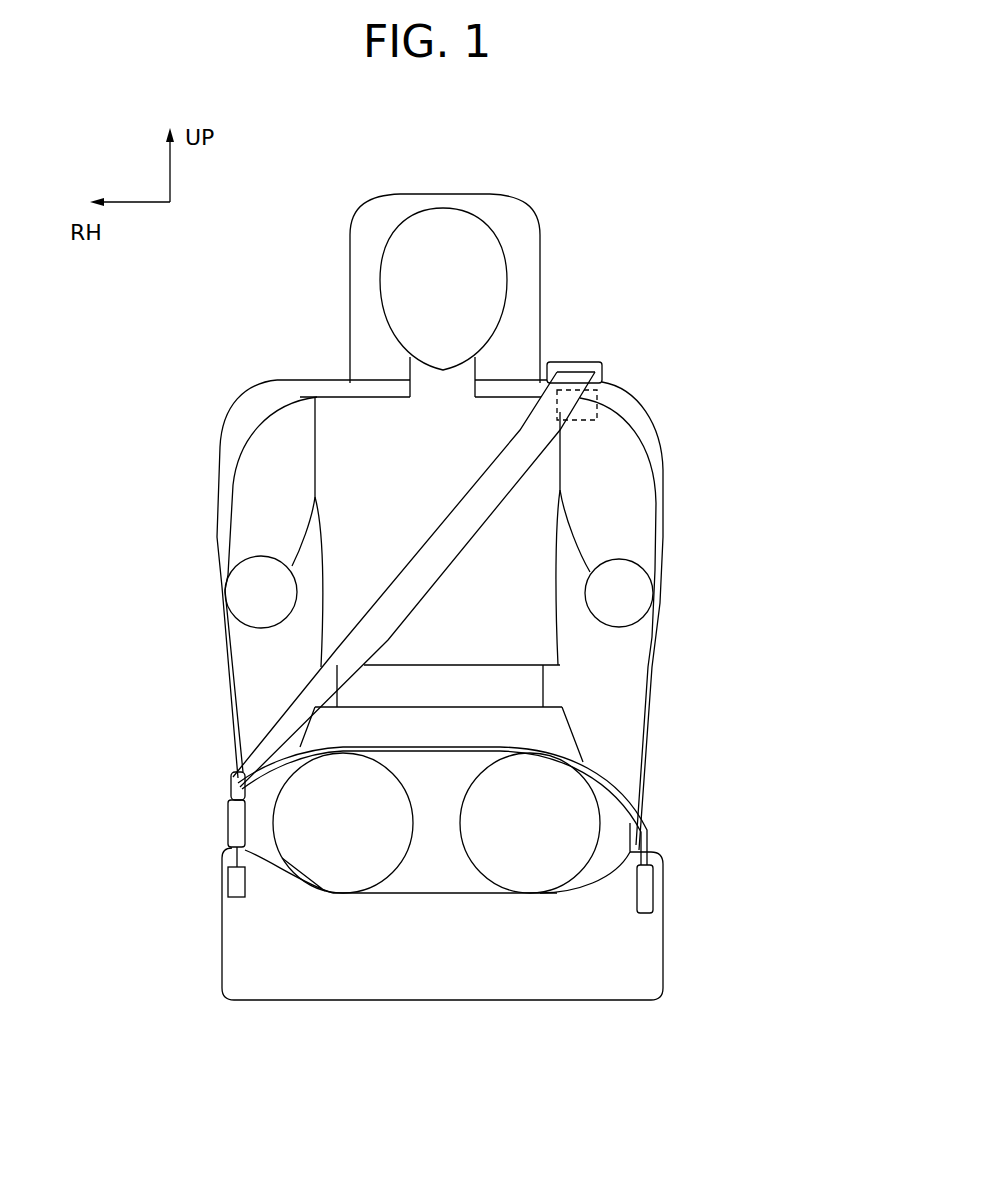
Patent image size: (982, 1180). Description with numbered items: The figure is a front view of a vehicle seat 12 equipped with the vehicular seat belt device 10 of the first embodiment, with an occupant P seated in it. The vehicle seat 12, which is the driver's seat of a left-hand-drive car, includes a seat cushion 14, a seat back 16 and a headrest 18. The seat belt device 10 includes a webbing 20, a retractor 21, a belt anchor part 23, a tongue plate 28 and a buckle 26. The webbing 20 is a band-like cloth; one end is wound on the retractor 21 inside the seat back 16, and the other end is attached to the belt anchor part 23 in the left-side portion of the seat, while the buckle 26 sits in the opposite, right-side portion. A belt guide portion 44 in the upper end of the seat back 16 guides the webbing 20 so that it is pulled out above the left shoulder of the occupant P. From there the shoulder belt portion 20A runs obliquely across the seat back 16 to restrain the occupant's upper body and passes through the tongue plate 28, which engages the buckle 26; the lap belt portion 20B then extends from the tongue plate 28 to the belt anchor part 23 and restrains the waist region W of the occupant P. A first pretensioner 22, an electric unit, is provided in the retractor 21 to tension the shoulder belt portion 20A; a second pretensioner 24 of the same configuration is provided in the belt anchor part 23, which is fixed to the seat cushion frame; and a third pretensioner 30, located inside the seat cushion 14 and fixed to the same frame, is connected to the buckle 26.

The vehicular seat belt device 10 is at (631, 248).
The vehicle seat 12 is at (280, 370).
The seat cushion 14 is at (222, 962).
The seat back 16 is at (648, 688).
The headrest 18 is at (527, 212).
The webbing 20 is at (477, 548).
The shoulder belt portion 20A is at (283, 708).
The lap belt portion 20B is at (277, 763).
The retractor 21 is at (577, 405).
The first pretensioner 22 is at (597, 400).
The belt anchor part 23 is at (680, 852).
The second pretensioner 24 is at (667, 893).
The buckle 26 is at (228, 803).
The tongue plate 28 is at (243, 770).
The third pretensioner 30 is at (216, 880).
The belt guide portion 44 is at (602, 372).
The occupant P is at (384, 219).
The waist region W is at (565, 713).